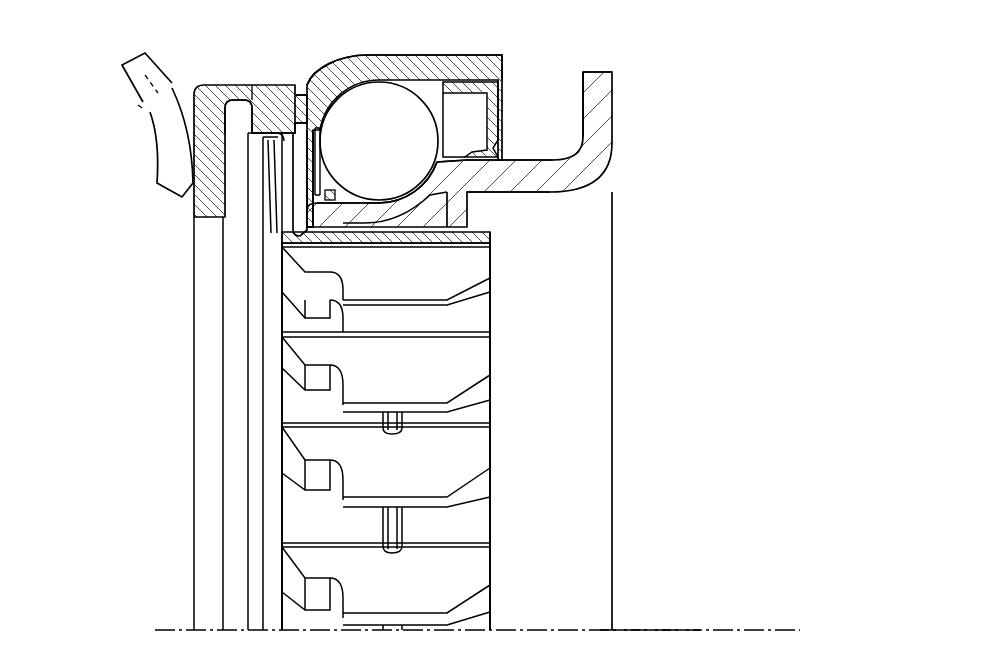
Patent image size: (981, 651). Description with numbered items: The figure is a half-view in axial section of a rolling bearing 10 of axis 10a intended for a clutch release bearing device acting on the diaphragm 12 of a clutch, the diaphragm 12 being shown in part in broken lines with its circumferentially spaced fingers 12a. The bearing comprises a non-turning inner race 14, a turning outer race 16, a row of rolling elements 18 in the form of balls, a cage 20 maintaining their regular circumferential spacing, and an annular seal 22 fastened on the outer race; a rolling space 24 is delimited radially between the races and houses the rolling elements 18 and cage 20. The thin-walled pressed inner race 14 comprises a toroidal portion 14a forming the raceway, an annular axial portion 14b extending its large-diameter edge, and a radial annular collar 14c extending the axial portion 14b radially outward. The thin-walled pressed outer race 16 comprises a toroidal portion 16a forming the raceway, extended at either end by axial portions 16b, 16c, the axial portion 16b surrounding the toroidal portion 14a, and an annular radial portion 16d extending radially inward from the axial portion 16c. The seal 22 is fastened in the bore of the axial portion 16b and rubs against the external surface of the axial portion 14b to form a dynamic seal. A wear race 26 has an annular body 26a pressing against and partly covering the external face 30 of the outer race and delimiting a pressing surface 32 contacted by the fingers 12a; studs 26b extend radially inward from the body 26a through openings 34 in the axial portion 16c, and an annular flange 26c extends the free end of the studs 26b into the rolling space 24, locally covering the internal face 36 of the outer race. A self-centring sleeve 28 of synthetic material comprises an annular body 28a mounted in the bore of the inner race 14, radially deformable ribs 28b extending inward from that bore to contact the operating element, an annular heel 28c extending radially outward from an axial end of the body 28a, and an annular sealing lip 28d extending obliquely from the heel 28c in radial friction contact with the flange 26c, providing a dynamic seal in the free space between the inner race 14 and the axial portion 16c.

The rolling bearing 10 is at (558, 48).
The axis 10a is at (641, 626).
The diaphragm 12 is at (122, 88).
The fingers 12a is at (176, 68).
The inner race 14 is at (620, 108).
The toroidal portion 14a is at (388, 210).
The axial portion 14b is at (512, 177).
The radial annular collar 14c is at (597, 80).
The outer race 16 is at (383, 50).
The toroidal portion 16a is at (343, 77).
The axial portion 16b is at (470, 62).
The axial portion 16c is at (300, 110).
The radial portion 16d is at (296, 236).
The rolling elements 18 is at (367, 151).
The cage 20 is at (325, 110).
The annular seal 22 is at (508, 118).
The rolling space 24 is at (438, 107).
The wear race 26 is at (216, 80).
The annular body 26a is at (207, 157).
The studs 26b is at (270, 105).
The annular flange 26c is at (240, 128).
The self-centring sleeve 28 is at (403, 290).
The annular body 28a is at (366, 250).
The ribs 28b is at (415, 392).
The annular heel 28c is at (284, 290).
The annular sealing lip 28d is at (290, 257).
The external face 30 is at (237, 225).
The pressing surface 32 is at (257, 198).
The opening 34 is at (258, 105).
The internal face 36 is at (286, 205).